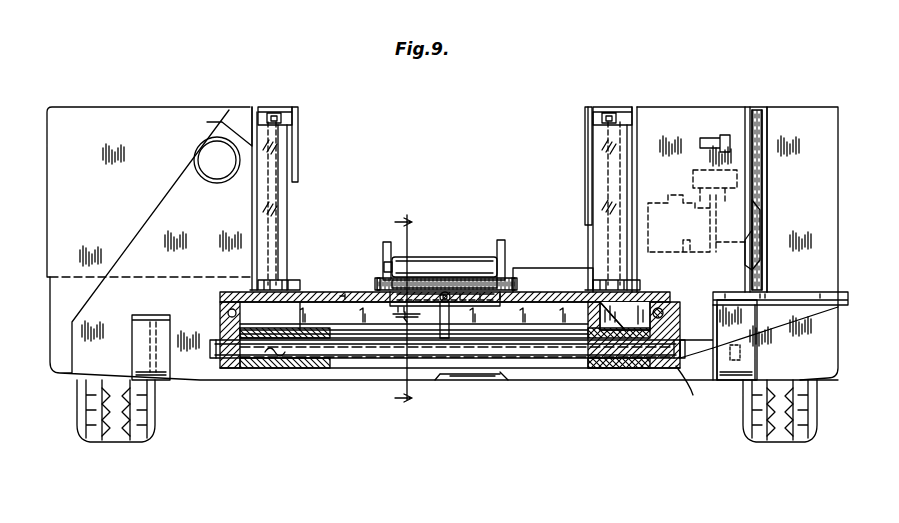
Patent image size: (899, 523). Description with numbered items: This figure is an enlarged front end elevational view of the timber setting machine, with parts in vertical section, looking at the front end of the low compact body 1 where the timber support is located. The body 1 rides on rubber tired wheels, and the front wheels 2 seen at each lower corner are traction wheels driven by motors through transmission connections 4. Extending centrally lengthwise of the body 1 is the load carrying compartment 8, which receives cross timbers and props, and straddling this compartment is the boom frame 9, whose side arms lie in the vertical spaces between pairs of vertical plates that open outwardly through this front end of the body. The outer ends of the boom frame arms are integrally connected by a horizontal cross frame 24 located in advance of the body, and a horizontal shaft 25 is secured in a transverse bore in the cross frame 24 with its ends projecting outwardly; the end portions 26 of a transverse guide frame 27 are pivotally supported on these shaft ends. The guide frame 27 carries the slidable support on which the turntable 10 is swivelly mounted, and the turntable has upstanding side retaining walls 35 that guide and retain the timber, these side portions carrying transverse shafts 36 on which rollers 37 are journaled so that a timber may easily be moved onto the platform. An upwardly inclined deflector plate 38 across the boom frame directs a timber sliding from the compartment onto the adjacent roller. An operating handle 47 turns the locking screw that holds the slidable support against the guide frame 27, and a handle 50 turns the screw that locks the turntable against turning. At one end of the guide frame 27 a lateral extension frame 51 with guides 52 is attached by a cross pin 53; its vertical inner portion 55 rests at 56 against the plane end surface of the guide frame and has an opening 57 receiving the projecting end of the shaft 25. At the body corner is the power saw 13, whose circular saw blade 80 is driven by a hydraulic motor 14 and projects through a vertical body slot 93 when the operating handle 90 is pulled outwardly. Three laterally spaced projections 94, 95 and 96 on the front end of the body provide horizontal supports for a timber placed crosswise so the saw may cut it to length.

The body 1 is at (205, 107).
The front wheels 2 is at (112, 430).
The transmission connections 4 is at (413, 311).
The load carrying compartment 8 is at (552, 125).
The boom frame 9 is at (276, 207).
The turntable 10 is at (510, 272).
The power saw 13 is at (757, 110).
The hydraulic motor 14 is at (712, 148).
The cross frame 24 is at (575, 356).
The shaft 25 is at (310, 356).
The end portions 26 is at (232, 368).
The transverse frame 27 is at (318, 292).
The side retaining walls 35 is at (385, 242).
The transverse shafts 36 is at (506, 272).
The rollers 37 is at (456, 257).
The deflector plate 38 is at (575, 268).
The operating handle 47 is at (452, 320).
The handle 50 is at (406, 320).
The lateral extension frame 51 is at (805, 310).
The guides 52 is at (795, 292).
The cross pin 53 is at (660, 308).
The vertical inner portion 55 is at (680, 368).
The resting surface 56 is at (672, 334).
The opening 57 is at (676, 368).
The circular saw blade 80 is at (763, 188).
The operating handle 90 is at (714, 136).
The body slot 93 is at (766, 140).
The projection 94 is at (745, 400).
The central projection 95 is at (472, 378).
The projection 96 is at (160, 380).